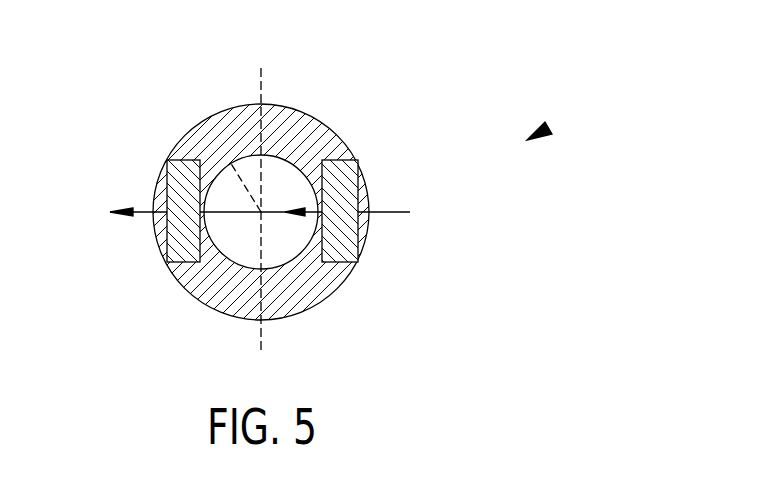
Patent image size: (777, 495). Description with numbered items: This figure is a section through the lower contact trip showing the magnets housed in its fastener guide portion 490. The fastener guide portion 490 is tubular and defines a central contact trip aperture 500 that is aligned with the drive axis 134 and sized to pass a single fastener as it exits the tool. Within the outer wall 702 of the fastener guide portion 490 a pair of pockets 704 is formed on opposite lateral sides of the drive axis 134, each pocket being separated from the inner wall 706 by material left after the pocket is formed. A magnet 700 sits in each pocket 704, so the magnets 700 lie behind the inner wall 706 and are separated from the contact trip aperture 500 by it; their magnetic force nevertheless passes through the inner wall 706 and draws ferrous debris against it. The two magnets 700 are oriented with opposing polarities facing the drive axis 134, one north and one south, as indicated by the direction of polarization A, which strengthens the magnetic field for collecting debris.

The drive axis 134 is at (213, 155).
The contact trip aperture 500 is at (238, 243).
The magnets 700 is at (350, 160).
The outer wall 702 is at (187, 292).
The pockets 704 is at (364, 198).
The inner wall 706 is at (312, 268).
The fastener guide portion 490 is at (544, 130).
The direction of polarization A is at (143, 211).